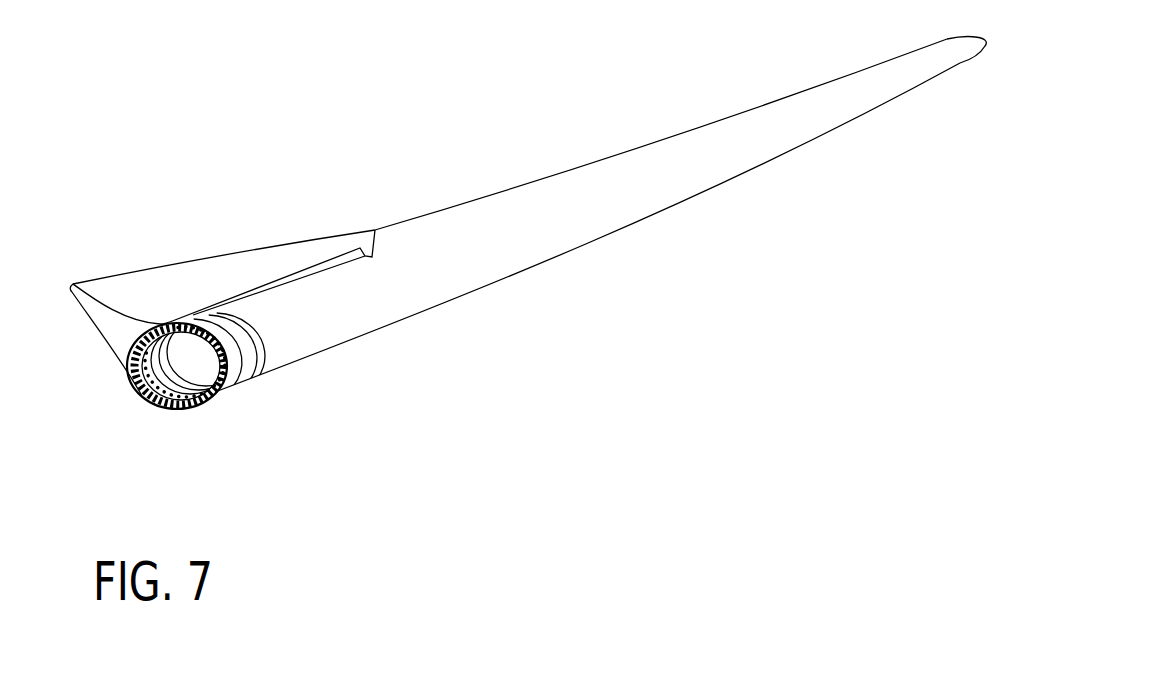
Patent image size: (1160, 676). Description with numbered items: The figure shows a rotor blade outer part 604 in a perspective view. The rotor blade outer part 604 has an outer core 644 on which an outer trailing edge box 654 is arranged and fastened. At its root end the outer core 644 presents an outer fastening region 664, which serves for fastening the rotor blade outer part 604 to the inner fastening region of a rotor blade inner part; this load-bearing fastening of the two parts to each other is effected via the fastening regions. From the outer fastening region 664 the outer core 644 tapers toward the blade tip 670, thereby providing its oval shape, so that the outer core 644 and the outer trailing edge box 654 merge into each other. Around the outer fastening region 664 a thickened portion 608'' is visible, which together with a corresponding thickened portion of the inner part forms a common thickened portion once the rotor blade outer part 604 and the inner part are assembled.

The rotor blade outer part 604 is at (617, 263).
The outer trailing edge box 654 is at (245, 230).
The outer core 644 is at (330, 373).
The thickened portion 608'' is at (219, 393).
The outer fastening region 664 is at (197, 420).
The blade tip 670 is at (965, 77).